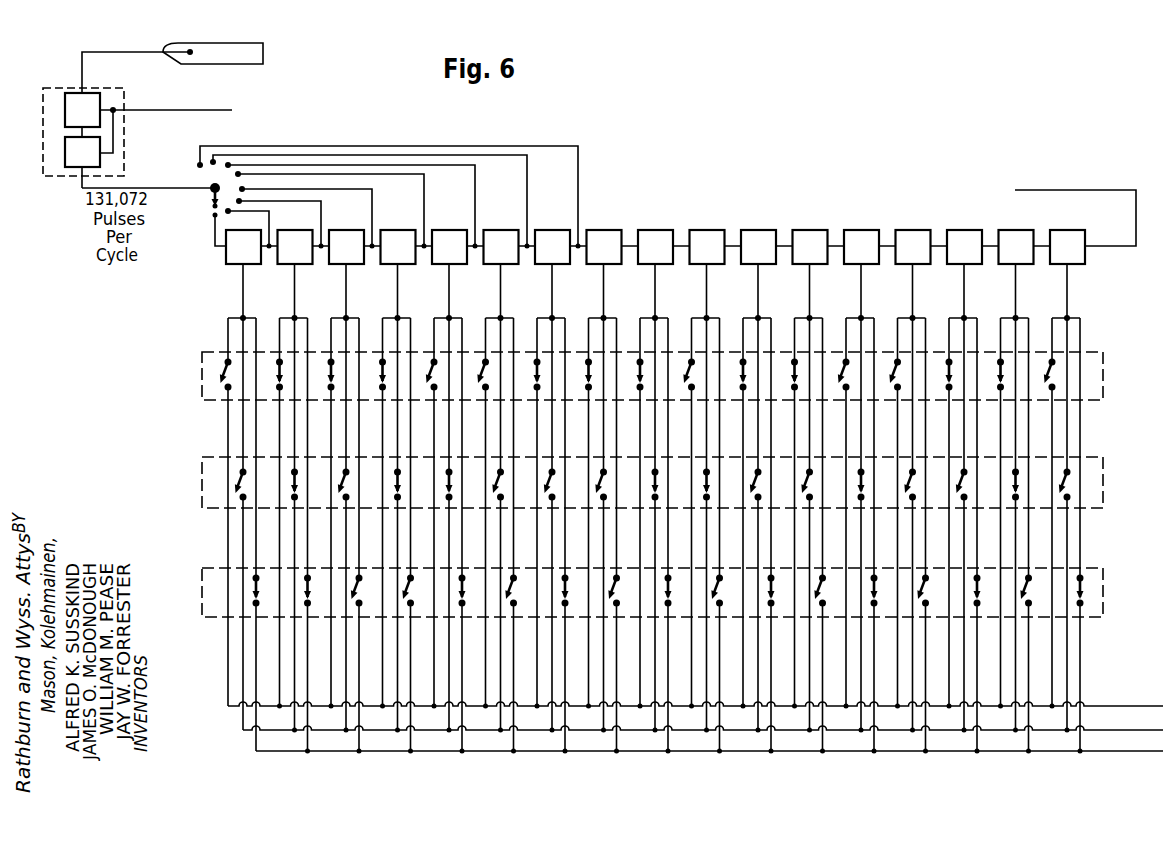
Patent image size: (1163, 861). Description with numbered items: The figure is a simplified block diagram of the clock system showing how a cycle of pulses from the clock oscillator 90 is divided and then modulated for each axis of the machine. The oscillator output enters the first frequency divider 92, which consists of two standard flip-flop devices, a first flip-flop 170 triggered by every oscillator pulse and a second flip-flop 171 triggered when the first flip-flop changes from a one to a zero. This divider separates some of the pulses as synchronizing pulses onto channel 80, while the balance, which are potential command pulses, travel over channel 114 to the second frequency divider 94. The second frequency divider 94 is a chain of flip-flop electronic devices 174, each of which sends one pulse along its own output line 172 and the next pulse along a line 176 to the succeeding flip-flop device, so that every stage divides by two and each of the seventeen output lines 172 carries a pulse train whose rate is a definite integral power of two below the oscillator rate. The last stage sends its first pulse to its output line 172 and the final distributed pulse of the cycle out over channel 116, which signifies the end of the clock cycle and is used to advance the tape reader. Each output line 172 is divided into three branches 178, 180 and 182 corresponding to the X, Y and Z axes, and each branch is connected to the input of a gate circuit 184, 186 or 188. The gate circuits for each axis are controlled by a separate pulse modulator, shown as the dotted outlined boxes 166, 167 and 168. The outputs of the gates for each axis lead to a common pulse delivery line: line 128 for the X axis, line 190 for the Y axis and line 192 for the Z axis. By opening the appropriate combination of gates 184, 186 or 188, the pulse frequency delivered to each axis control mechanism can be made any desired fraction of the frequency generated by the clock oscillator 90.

The channel 80 is at (203, 110).
The clock oscillator 90 is at (232, 43).
The first frequency divider 92 is at (125, 97).
The second frequency divider 94 is at (633, 237).
The channel 114 is at (149, 187).
The channel 116 is at (1082, 190).
The pulse delivery line 128 is at (1097, 706).
The pulse modulator 166 is at (1106, 373).
The pulse modulator 167 is at (1106, 488).
The pulse modulator 168 is at (1106, 603).
The first flip-flop 170 is at (70, 97).
The second flip-flop 171 is at (73, 163).
The output line 172 is at (295, 294).
The flip-flop electronic device 174 is at (352, 215).
The line 176 is at (287, 270).
The branch 178 is at (226, 320).
The branch 180 is at (242, 333).
The branch 182 is at (256, 344).
The gate circuit 184 is at (218, 376).
The gate circuit 186 is at (240, 483).
The gate circuit 188 is at (253, 592).
The pulse delivery line 190 is at (1100, 730).
The pulse delivery line 192 is at (1097, 752).